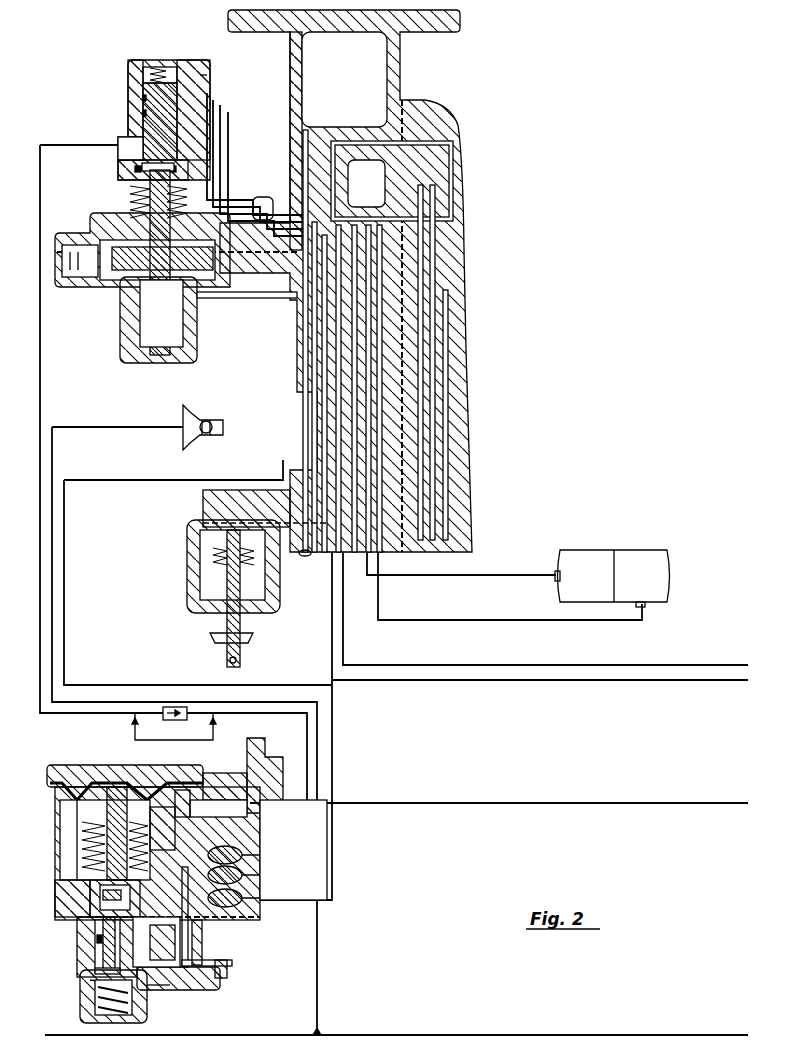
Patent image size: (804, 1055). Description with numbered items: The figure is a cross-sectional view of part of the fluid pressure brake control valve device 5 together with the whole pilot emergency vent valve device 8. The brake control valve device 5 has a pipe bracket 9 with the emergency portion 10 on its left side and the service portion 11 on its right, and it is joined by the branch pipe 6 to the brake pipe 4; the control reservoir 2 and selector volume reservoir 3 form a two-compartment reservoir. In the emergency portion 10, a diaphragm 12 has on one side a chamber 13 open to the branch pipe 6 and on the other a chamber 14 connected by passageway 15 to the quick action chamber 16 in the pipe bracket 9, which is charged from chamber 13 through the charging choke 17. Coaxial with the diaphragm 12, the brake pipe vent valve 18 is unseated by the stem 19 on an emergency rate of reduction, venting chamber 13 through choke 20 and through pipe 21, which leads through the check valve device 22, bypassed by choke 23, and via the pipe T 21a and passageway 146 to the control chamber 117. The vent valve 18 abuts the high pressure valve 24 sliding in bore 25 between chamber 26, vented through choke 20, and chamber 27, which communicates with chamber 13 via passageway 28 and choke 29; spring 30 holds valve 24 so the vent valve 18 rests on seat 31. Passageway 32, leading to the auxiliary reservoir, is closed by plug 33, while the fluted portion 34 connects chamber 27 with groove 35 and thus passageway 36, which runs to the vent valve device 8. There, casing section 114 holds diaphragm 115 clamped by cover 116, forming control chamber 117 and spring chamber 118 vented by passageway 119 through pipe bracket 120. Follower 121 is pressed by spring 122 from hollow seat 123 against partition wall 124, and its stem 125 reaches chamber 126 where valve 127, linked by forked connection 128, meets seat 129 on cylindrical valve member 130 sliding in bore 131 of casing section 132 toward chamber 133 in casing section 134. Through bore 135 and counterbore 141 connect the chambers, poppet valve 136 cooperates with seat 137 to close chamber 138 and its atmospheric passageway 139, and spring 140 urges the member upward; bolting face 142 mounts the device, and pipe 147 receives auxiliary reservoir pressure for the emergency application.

The control reservoir 2 is at (588, 558).
The selector volume reservoir 3 is at (636, 560).
The brake pipe 4 is at (722, 1035).
The fluid pressure brake control valve device 5 is at (285, 570).
The branch pipe 6 is at (297, 370).
The pilot emergency vent valve device 8 is at (47, 754).
The pipe bracket 9 is at (292, 47).
The emergency portion 10 is at (118, 75).
The service portion 11 is at (440, 102).
The diaphragm 12 is at (105, 275).
The chamber 13 is at (95, 232).
The chamber 14 is at (128, 290).
The passageway 15 is at (322, 145).
The quick action chamber 16 is at (372, 62).
The quick action chamber charging choke 17 is at (62, 285).
The brake pipe vent valve 18 is at (142, 170).
The stem 19 is at (130, 196).
The choke 20 is at (128, 166).
The passageway and pipe 21 is at (75, 145).
The pipe T 21a is at (293, 850).
The check valve device 22 is at (172, 705).
The choke 23 is at (175, 740).
The high pressure valve 24 is at (148, 78).
The bore 25 is at (143, 113).
The chamber 26 is at (125, 140).
The chamber 27 is at (140, 64).
The passageway 28 is at (190, 68).
The choke 29 is at (218, 125).
The helical biasing spring 30 is at (158, 67).
The annular valve seat 31 is at (232, 172).
The passageway 32 is at (262, 100).
The plug 33 is at (225, 140).
The fluted portion 34 is at (210, 75).
The peripheral annular groove 35 is at (143, 98).
The passageway 36 is at (212, 100).
The casing section 114 is at (60, 870).
The diaphragm 115 is at (60, 786).
The cover 116 is at (50, 770).
The control chamber 117 is at (88, 760).
The spring chamber 118 is at (82, 840).
The passageway 119 is at (185, 795).
The pipe bracket 120 is at (258, 775).
The diaphragm follower 121 is at (80, 830).
The spring 122 is at (120, 800).
The hollow spring seat 123 is at (72, 855).
The partition wall 124 is at (95, 885).
The stem 125 is at (62, 808).
The chamber 126 is at (100, 895).
The valve 127 is at (100, 912).
The forked connection 128 is at (140, 925).
The valve seat 129 is at (100, 925).
The cylindrical valve member 130 is at (95, 940).
The bore 131 is at (95, 948).
The casing section 132 is at (215, 960).
The chamber 133 is at (135, 1010).
The casing section 134 is at (225, 975).
The through bore 135 is at (133, 985).
The poppet type valve 136 is at (120, 975).
The annular valve seat 137 is at (200, 990).
The chamber 138 is at (100, 968).
The passageway 139 is at (243, 860).
The spring 140 is at (98, 1000).
The counterbore 141 is at (185, 945).
The vertical bolting face 142 is at (262, 855).
The passageway 146 is at (240, 800).
The passageway and pipe 147 is at (305, 556).